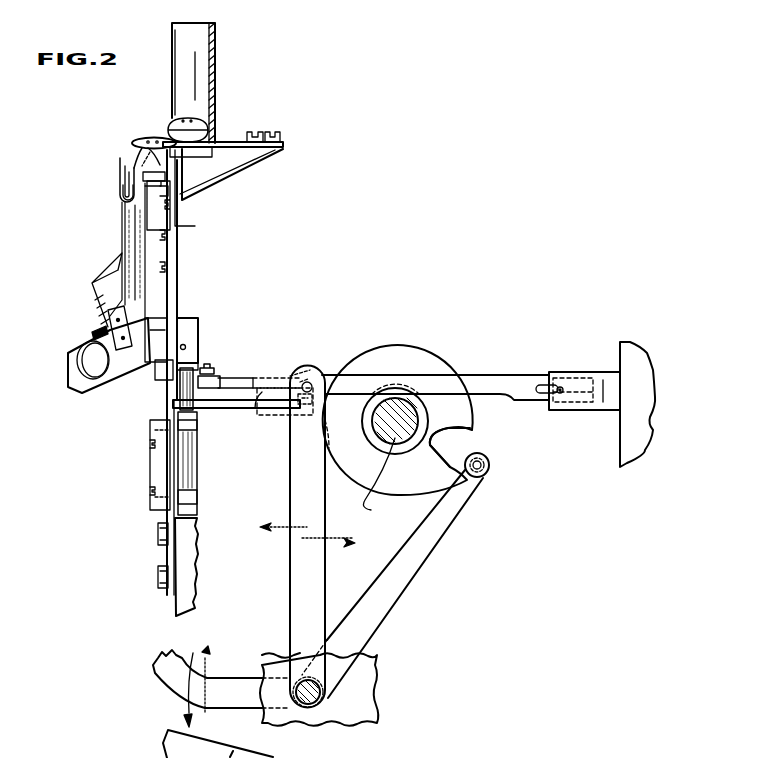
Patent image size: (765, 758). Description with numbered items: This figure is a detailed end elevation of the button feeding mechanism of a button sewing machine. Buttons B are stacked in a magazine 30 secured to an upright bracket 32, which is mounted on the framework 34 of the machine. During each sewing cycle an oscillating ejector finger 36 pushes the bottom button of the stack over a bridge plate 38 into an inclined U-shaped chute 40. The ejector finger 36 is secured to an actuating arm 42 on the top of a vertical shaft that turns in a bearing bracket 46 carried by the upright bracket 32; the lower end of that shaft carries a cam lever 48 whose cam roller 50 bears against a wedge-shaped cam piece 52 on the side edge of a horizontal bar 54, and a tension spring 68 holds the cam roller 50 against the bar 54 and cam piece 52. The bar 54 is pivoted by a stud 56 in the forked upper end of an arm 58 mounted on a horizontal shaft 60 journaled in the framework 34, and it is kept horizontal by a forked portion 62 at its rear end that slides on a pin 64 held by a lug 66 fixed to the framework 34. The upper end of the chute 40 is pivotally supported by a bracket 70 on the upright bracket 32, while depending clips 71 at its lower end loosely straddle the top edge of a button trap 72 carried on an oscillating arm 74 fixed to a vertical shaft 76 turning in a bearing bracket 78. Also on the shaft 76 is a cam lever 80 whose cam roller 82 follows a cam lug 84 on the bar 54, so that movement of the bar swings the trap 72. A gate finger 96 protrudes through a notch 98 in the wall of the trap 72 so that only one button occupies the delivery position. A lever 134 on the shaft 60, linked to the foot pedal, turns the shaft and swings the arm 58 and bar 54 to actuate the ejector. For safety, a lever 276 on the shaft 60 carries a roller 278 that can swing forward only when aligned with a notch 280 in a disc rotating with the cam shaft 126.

The magazine 30 is at (214, 83).
The button B is at (159, 138).
The ejector finger 36 is at (230, 142).
The bridge plate 38 is at (140, 150).
The U-shaped chute 40 is at (119, 171).
The actuating arm 42 is at (202, 182).
The bearing bracket 46 is at (172, 267).
The upright bracket 32 is at (178, 293).
The framework 34 is at (188, 566).
The bracket 70 is at (143, 170).
The depending clips 71 is at (110, 320).
The button trap 72 is at (112, 384).
The oscillating arm 74 is at (196, 337).
The vertical shaft 76 is at (180, 388).
The bearing bracket 78 is at (158, 467).
The gate finger 96 is at (105, 335).
The notch 98 is at (92, 334).
The tension spring 68 is at (196, 357).
The cam lever 48 is at (218, 368).
The cam roller 50 is at (256, 385).
The cam piece 52 is at (242, 400).
The horizontal bar 54 is at (270, 373).
The stud 56 is at (308, 382).
The arm 58 is at (294, 487).
The horizontal shaft 60 is at (312, 705).
The forked portion 62 is at (542, 380).
The pin 64 is at (570, 397).
The lug 66 is at (603, 380).
The cam lever 80 is at (268, 407).
The cam roller 82 is at (283, 412).
The cam lug 84 is at (296, 372).
The cam shaft 126 is at (398, 435).
The lever 134 is at (218, 685).
The safety lever 276 is at (388, 595).
The roller 278 is at (489, 471).
The notch 280 is at (460, 435).